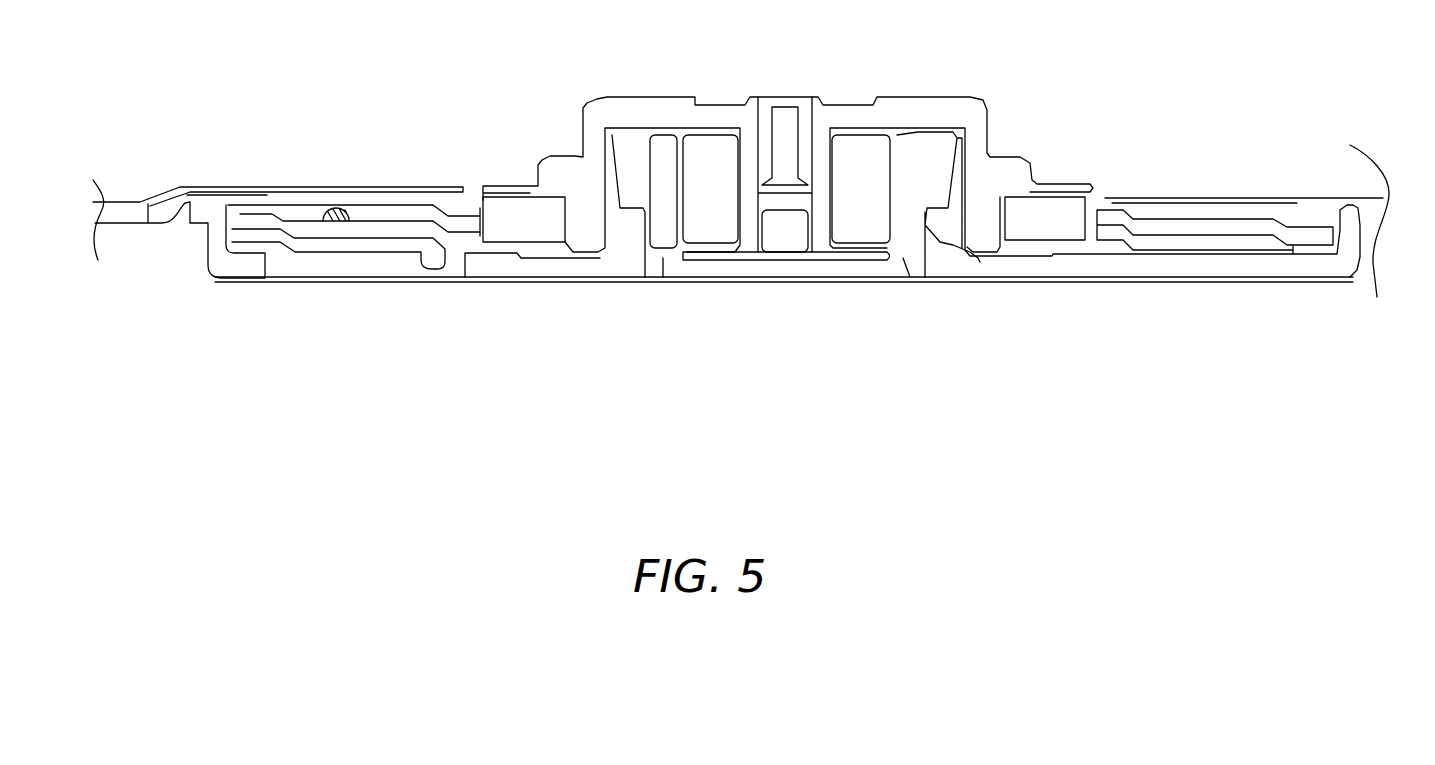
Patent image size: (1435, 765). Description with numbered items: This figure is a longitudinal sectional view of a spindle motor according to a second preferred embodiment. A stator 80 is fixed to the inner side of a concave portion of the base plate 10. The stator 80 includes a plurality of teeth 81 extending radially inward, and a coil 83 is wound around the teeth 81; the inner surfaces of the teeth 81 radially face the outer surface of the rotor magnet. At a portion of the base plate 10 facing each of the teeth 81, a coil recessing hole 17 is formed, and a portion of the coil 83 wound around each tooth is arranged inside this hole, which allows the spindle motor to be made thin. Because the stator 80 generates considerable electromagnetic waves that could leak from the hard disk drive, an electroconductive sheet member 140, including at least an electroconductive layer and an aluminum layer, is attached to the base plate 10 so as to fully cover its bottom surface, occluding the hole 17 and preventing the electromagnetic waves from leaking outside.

The base plate 10 is at (1093, 265).
The coil recessing hole 17 is at (275, 280).
The stator 80 is at (470, 197).
The teeth 81 is at (420, 240).
The coil 83 is at (330, 258).
The electroconductive sheet member 140 is at (350, 278).